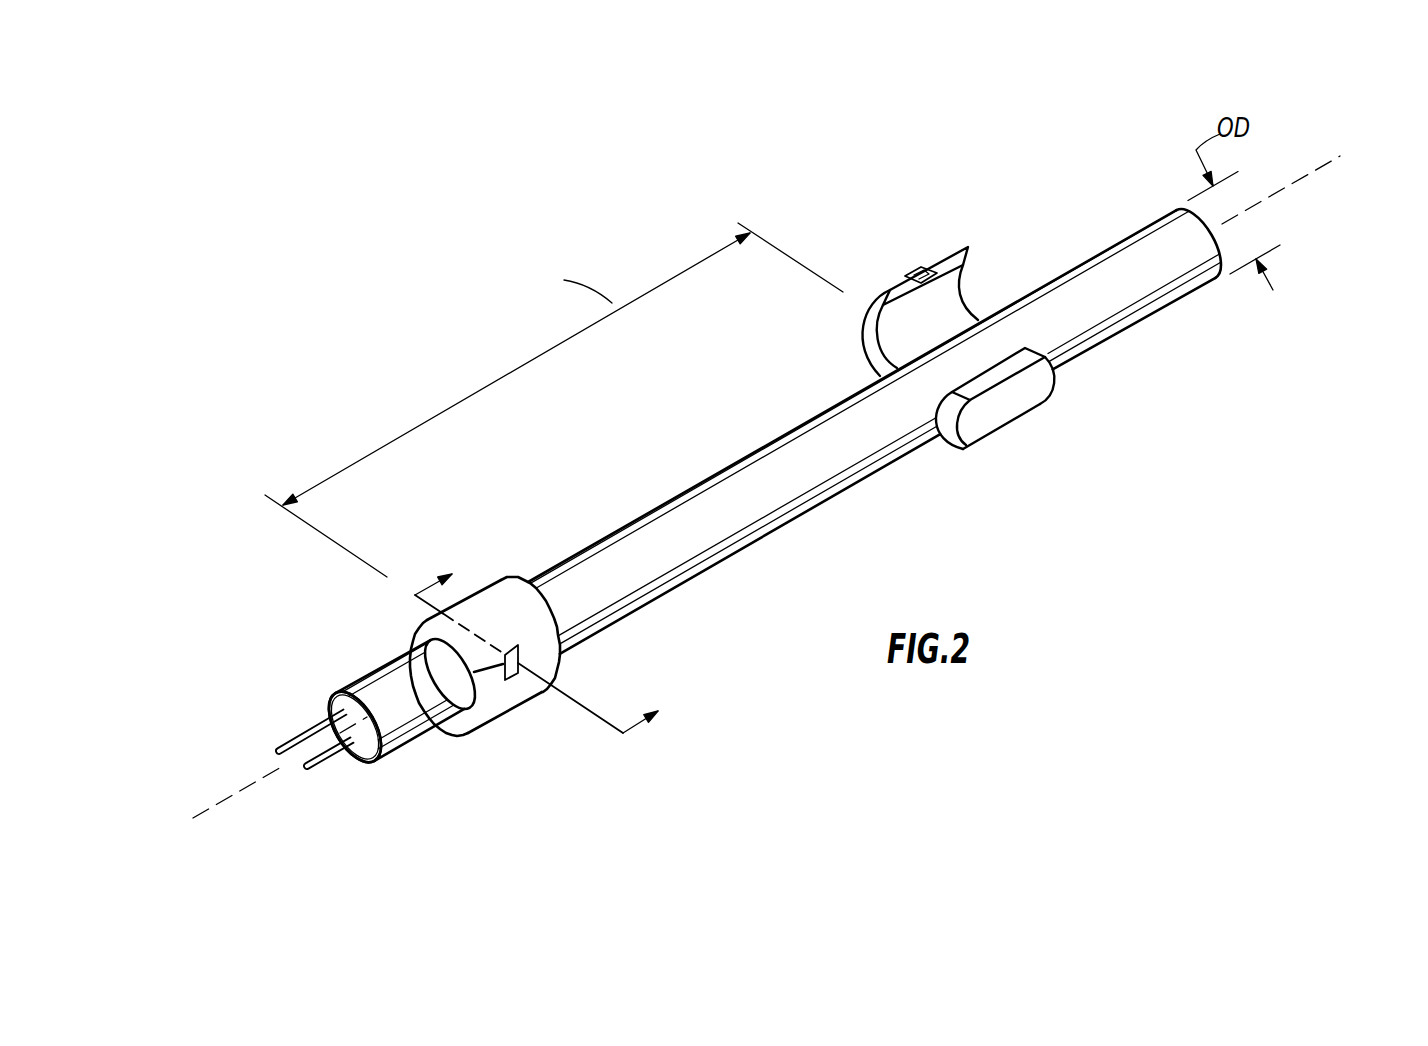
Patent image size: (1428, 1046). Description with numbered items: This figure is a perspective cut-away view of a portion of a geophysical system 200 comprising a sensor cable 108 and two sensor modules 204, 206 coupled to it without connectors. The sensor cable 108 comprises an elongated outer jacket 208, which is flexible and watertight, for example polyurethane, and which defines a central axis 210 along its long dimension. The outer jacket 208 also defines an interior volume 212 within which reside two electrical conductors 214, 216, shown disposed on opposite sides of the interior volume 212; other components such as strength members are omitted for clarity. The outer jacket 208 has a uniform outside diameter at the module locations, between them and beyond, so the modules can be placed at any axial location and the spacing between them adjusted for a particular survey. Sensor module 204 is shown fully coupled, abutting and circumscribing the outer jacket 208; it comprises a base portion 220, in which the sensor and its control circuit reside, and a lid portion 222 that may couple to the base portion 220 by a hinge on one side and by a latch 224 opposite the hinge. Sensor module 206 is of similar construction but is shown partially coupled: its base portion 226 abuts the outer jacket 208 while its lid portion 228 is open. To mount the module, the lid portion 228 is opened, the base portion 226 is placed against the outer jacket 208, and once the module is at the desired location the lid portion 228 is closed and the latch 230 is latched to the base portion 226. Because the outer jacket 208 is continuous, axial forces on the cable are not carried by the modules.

The geophysical system 200 is at (214, 291).
The sensor cable 108 is at (443, 372).
The sensor module 204 is at (443, 556).
The sensor module 206 is at (883, 276).
The outer jacket 208 is at (803, 488).
The central axis 210 is at (1318, 170).
The interior volume 212 is at (323, 697).
The electrical conductor 214 is at (295, 726).
The electrical conductor 216 is at (330, 764).
The base portion 220 is at (520, 689).
The lid portion 222 is at (491, 596).
The latch 224 is at (503, 682).
The base portion 226 is at (1006, 399).
The lid portion 228 is at (967, 247).
The latch 230 is at (911, 266).